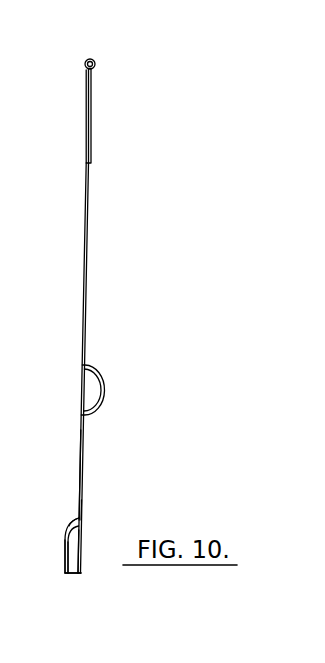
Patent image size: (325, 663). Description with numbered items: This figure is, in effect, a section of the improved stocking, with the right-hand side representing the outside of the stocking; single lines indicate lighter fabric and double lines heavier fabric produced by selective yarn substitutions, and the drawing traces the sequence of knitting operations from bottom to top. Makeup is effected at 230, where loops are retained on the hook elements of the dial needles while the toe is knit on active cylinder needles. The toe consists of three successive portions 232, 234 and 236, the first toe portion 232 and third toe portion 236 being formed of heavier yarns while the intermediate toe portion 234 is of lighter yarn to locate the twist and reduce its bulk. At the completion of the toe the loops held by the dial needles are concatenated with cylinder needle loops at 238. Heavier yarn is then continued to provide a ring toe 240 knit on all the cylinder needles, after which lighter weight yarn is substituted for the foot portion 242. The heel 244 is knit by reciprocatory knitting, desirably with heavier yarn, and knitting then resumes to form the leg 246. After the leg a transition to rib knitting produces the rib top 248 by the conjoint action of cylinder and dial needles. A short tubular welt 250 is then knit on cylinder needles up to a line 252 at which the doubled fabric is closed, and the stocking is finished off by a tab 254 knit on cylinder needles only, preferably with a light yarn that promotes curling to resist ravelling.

The makeup 230 is at (78, 525).
The first toe portion 232 is at (63, 563).
The intermediate toe portion 234 is at (73, 575).
The third toe portion 236 is at (83, 563).
The concatenation of dial and cylinder loops 238 is at (75, 528).
The ring toe 240 is at (82, 508).
The foot portion 242 is at (81, 471).
The heel 244 is at (104, 382).
The leg 246 is at (88, 220).
The rib top 248 is at (92, 107).
The tubular welt 250 is at (94, 60).
The closing line 252 is at (86, 67).
The tab 254 is at (87, 73).